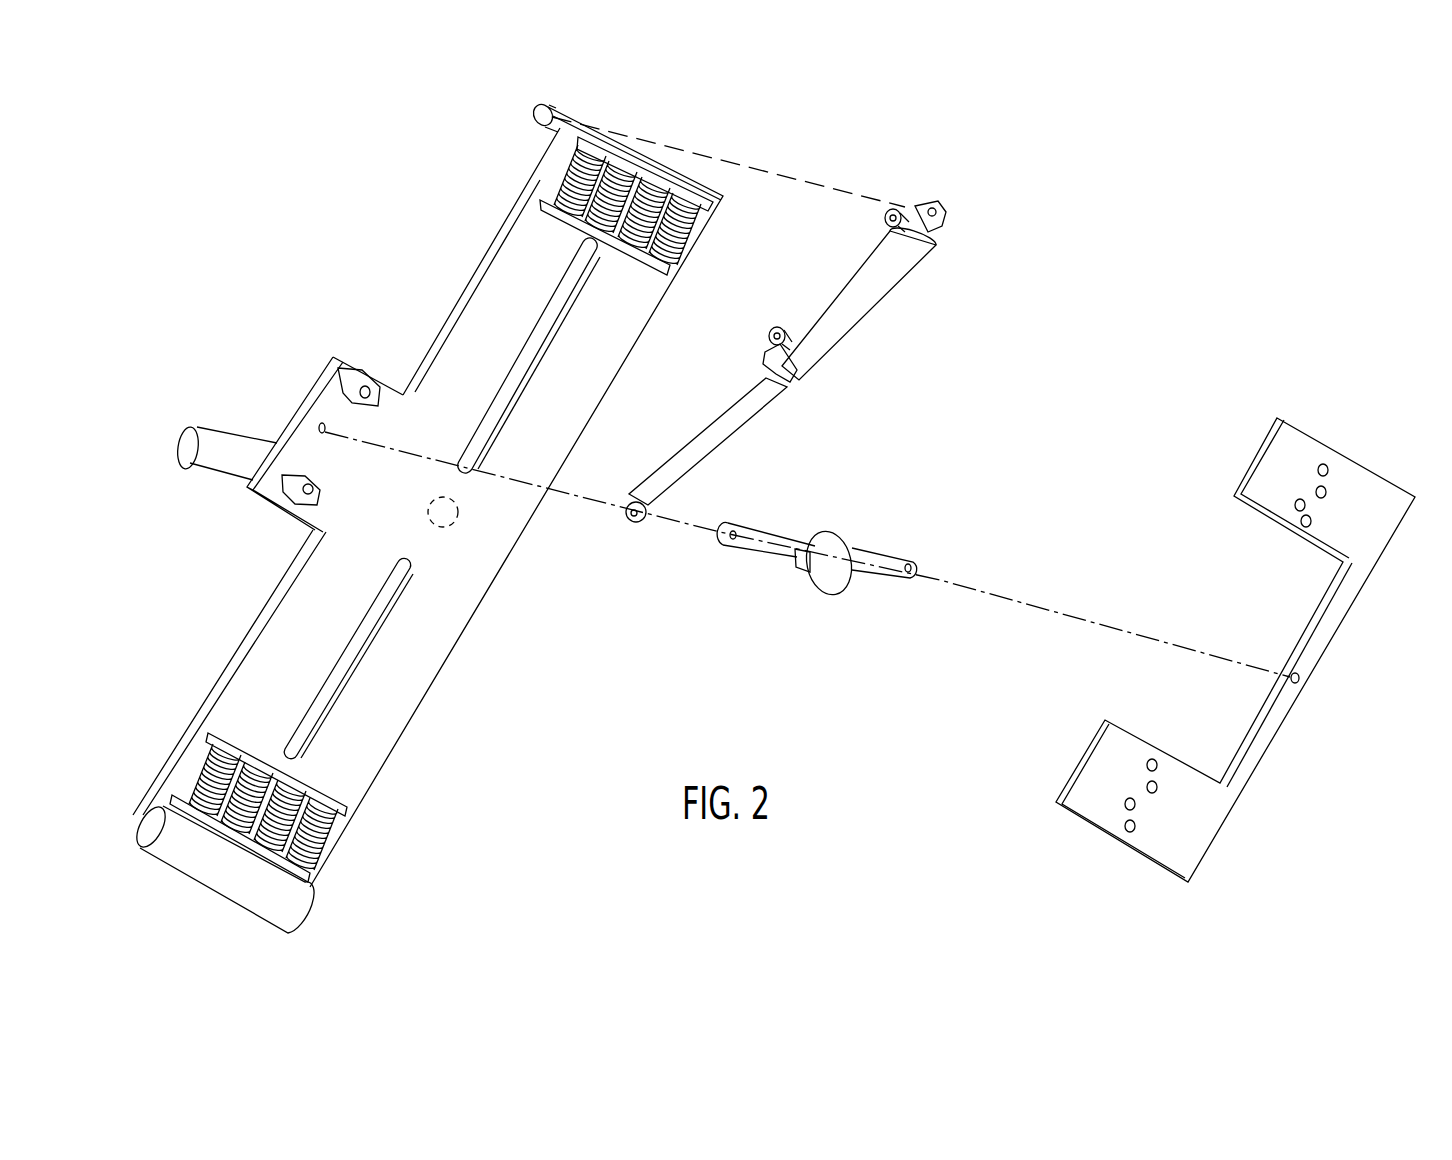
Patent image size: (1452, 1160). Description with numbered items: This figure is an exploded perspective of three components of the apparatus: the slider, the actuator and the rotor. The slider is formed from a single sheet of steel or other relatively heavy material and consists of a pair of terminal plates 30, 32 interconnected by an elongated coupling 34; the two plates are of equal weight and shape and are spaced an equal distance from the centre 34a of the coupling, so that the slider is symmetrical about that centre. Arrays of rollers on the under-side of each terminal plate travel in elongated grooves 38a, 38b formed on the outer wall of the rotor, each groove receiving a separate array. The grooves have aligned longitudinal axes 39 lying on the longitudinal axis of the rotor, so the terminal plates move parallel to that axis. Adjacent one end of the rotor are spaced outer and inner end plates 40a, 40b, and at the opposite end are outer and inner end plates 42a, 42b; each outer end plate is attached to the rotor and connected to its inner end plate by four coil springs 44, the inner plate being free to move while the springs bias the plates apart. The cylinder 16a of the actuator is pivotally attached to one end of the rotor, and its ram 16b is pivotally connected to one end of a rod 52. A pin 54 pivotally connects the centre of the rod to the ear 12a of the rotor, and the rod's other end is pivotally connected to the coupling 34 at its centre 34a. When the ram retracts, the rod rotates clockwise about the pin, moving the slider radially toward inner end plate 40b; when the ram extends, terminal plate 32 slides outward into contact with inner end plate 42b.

The ear of the rotor 12a is at (380, 368).
The cylinder of the actuator 16a is at (857, 322).
The ram of the actuator 16b is at (727, 433).
The terminal plate 30 is at (1194, 826).
The terminal plate 32 is at (1374, 517).
The elongated coupling 34 is at (1261, 746).
The centre of the coupling 34a is at (1304, 675).
The elongated groove 38a is at (362, 653).
The elongated groove 38b is at (548, 345).
The longitudinal axes of the grooves 39 is at (420, 546).
The outer end plate 40a is at (320, 900).
The inner end plate 40b is at (350, 810).
The outer end plate 42a is at (663, 178).
The inner end plate 42b is at (650, 268).
The coil springs 44 is at (317, 833).
The rod 52 is at (880, 554).
The pin 54 is at (800, 567).